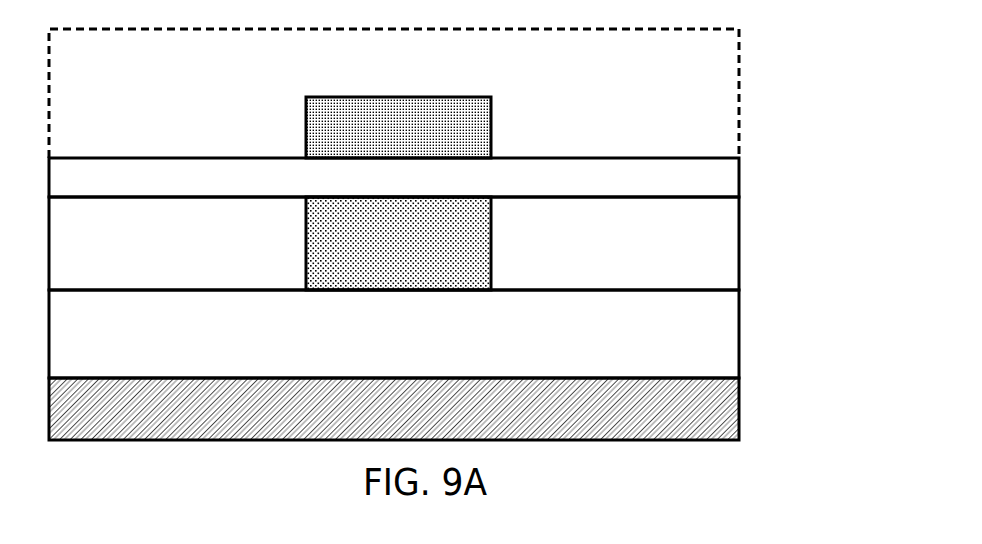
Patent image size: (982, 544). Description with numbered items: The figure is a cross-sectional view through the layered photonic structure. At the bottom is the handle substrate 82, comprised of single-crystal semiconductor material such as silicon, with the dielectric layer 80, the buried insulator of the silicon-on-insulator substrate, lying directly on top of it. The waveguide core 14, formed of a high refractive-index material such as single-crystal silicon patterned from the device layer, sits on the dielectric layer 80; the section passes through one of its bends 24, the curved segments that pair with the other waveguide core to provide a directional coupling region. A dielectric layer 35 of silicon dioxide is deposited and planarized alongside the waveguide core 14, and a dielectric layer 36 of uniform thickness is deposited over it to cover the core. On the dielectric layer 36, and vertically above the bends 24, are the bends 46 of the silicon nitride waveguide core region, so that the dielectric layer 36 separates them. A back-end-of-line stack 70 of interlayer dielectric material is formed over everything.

The back-end-of-line stack 70 is at (720, 81).
The bends 46 is at (462, 130).
The dielectric layer 36 is at (720, 182).
The dielectric layer 35 is at (718, 233).
The bends 24 is at (365, 247).
The waveguide core 14 is at (514, 240).
The dielectric layer 80 is at (718, 347).
The handle substrate 82 is at (718, 406).